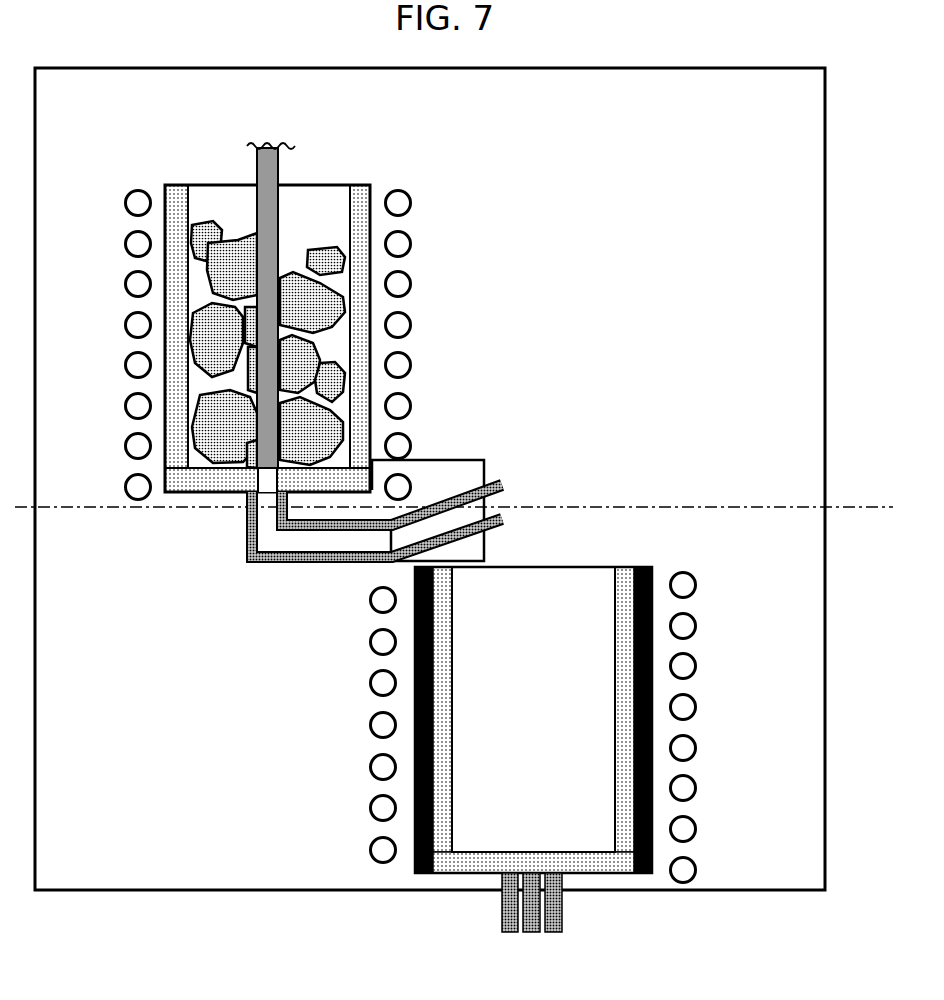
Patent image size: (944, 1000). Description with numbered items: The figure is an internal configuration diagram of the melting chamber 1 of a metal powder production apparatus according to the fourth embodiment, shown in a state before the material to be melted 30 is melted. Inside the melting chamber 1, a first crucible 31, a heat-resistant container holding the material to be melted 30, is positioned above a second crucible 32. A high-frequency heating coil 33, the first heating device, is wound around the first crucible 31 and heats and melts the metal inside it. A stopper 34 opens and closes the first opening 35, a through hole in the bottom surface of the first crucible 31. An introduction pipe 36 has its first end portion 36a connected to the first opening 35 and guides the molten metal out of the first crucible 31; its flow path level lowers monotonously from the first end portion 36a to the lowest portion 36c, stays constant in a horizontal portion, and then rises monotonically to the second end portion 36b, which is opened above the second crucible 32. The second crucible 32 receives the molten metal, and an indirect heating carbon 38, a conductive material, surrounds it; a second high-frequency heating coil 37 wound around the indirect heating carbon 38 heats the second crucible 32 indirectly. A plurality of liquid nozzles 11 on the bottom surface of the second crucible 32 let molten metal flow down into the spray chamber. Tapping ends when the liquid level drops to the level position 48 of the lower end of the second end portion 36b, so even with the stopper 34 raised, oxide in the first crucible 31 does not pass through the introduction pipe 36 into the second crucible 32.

The melting chamber 1 is at (786, 122).
The liquid nozzles 11 is at (562, 912).
The material to be melted 30 is at (323, 248).
The first crucible 31 is at (180, 183).
The second crucible 32 is at (622, 570).
The high-frequency heating coil 33 is at (133, 187).
The stopper 34 is at (280, 158).
The first opening 35 is at (255, 477).
The introduction pipe 36 is at (247, 540).
The first end portion 36a is at (288, 495).
The second end portion 36b is at (502, 507).
The lowest portion 36c is at (330, 538).
The high-frequency heating coil 37 is at (685, 571).
The indirect heating carbon 38 is at (647, 567).
The level position 48 is at (85, 505).